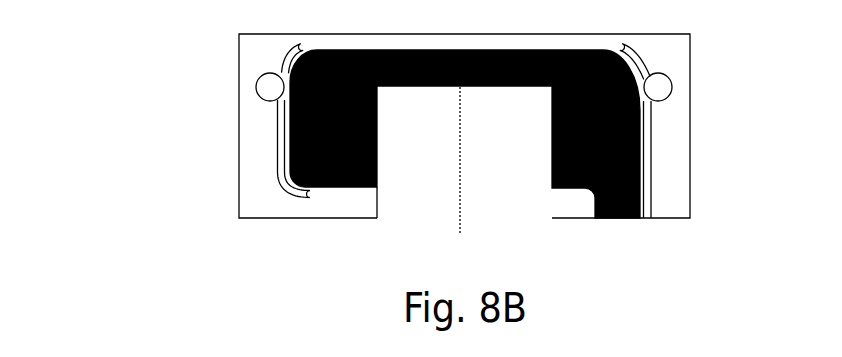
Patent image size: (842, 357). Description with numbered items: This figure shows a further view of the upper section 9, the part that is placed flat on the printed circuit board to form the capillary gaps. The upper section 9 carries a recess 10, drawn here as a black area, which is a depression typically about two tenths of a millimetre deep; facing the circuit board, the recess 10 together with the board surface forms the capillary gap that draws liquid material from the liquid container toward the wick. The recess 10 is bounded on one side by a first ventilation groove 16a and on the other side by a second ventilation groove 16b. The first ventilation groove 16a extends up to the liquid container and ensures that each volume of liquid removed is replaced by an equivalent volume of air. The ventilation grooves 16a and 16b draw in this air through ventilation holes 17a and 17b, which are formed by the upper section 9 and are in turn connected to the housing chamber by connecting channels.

The upper section 9 is at (292, 245).
The recess 10 is at (460, 63).
The first ventilation groove 16a is at (647, 157).
The second ventilation groove 16b is at (282, 137).
The first ventilation hole 17a is at (658, 87).
The second ventilation hole 17b is at (268, 87).